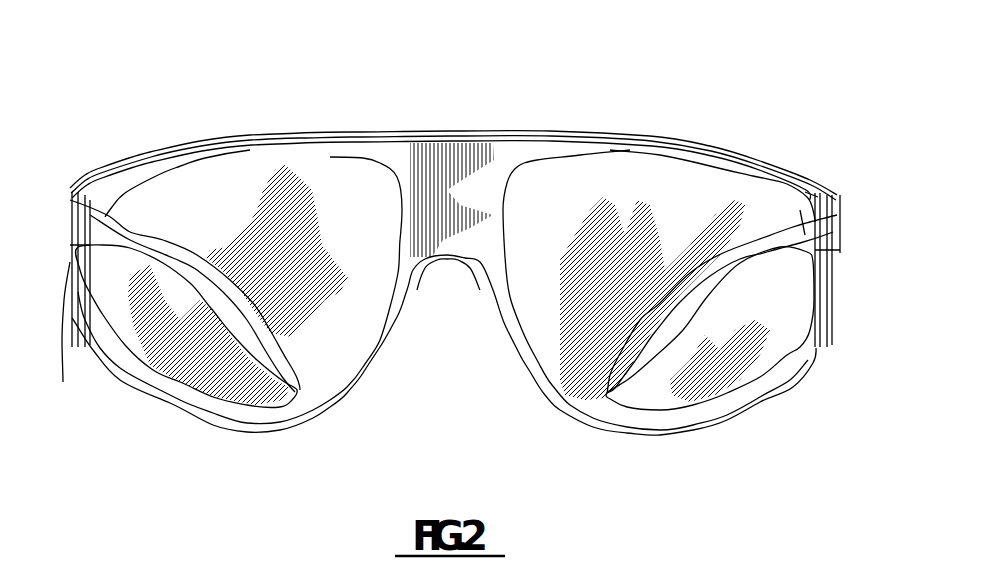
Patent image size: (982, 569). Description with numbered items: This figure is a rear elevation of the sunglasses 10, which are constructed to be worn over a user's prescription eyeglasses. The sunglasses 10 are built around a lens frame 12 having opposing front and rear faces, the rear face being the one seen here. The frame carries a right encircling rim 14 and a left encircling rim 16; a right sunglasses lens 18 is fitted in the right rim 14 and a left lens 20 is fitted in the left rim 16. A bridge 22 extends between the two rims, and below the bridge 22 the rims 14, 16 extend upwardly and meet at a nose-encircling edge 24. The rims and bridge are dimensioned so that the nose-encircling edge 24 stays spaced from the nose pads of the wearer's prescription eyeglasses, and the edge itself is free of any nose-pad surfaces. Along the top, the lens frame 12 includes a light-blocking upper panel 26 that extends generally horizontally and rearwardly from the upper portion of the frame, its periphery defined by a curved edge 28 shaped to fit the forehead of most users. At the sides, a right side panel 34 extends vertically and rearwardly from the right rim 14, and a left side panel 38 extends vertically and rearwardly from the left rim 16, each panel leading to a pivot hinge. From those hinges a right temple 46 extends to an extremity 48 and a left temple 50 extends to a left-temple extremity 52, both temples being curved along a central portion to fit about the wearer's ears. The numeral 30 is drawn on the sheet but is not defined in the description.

The sunglasses 10 is at (672, 102).
The lens frame 12 is at (788, 184).
The right encircling rim 14 is at (710, 420).
The left encircling rim 16 is at (175, 402).
The right sunglasses lens 18 is at (639, 272).
The left lens 20 is at (252, 272).
The bridge 22 is at (442, 206).
The nose-encircling edge 24 is at (463, 258).
The light-blocking upper panel 26 is at (401, 138).
The curved edge 28 is at (549, 140).
The temple 30 is at (93, 216).
The right side panel 34 is at (833, 347).
The left side panel 38 is at (63, 382).
The right temple 46 is at (766, 251).
The extremity 48 is at (609, 396).
The left temple 50 is at (138, 242).
The left-temple extremity 52 is at (297, 392).